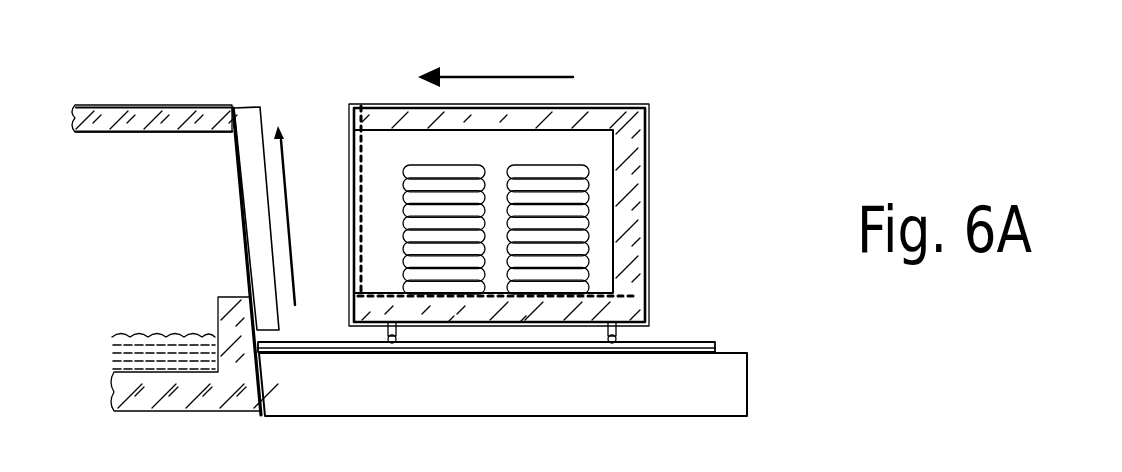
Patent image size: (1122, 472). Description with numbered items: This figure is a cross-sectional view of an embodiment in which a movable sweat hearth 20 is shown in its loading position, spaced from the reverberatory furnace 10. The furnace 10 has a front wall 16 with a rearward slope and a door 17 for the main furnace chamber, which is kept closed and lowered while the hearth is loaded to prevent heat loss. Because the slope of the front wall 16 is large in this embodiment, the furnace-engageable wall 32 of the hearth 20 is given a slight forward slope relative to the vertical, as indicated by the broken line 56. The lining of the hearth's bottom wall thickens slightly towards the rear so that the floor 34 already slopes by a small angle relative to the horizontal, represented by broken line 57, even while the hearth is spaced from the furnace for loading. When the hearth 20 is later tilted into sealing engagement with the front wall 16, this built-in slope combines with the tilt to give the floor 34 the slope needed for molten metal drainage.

The reverberatory furnace 10 is at (170, 78).
The door 17 is at (247, 120).
The furnace-engageable wall 32 is at (348, 118).
The broken line 56 is at (363, 93).
The sweat hearth 20 is at (680, 172).
The floor 34 is at (590, 294).
The broken line 57 is at (613, 300).
The front wall 16 is at (279, 337).